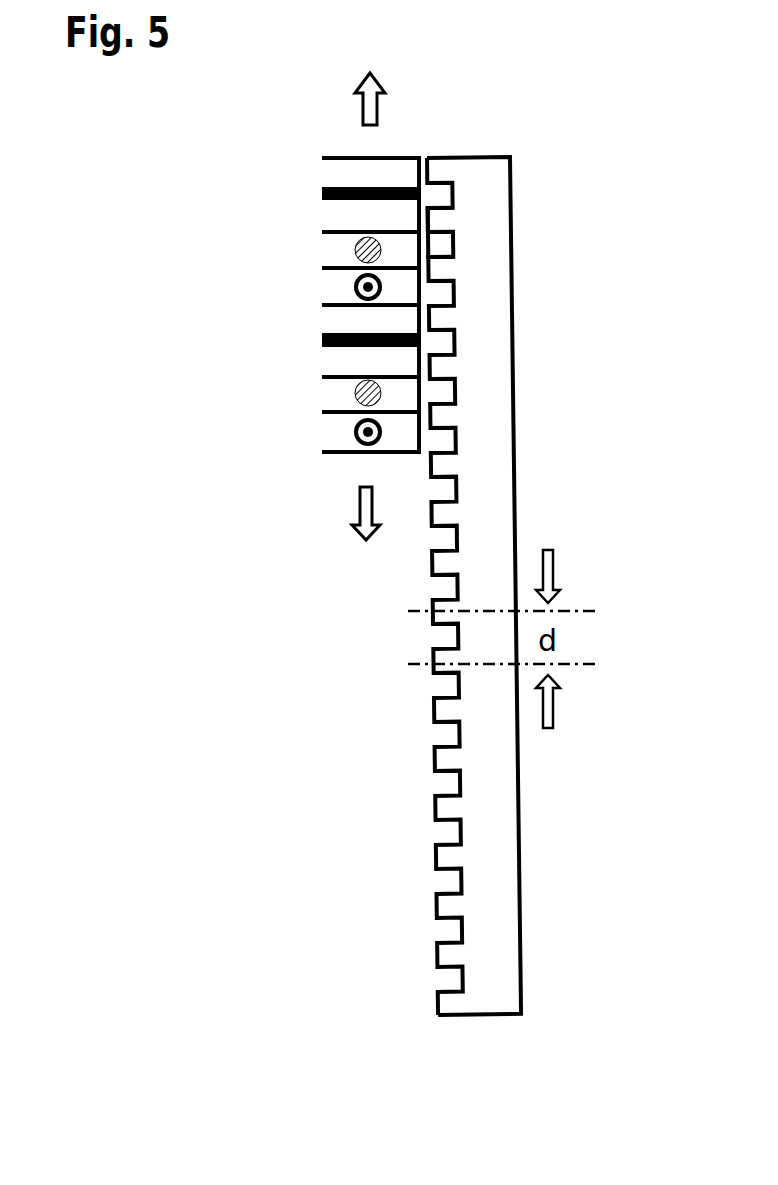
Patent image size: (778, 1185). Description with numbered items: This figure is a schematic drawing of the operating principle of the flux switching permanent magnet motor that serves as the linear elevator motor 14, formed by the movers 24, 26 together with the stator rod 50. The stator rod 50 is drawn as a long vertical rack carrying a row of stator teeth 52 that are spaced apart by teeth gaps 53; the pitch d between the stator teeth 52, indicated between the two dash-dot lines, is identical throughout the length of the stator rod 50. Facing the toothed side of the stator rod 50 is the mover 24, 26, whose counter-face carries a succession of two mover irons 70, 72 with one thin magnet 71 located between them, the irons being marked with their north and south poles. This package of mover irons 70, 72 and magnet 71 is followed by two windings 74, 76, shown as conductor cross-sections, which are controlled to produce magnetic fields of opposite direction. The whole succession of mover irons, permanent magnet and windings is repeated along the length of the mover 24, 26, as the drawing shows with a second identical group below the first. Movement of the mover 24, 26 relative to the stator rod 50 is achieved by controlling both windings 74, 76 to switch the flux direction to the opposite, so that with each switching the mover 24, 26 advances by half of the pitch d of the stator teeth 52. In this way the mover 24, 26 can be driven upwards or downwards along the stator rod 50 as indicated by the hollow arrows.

The linear elevator motor 14 is at (272, 490).
The mover 24 is at (332, 147).
The mover 26 is at (282, 308).
The mover iron 70 is at (332, 175).
The thin magnet 71 is at (322, 188).
The mover iron 72 is at (330, 207).
The winding 74 is at (345, 243).
The winding 76 is at (345, 292).
The stator rod 50 is at (488, 355).
The stator teeth 52 is at (435, 222).
The teeth gaps 53 is at (437, 243).